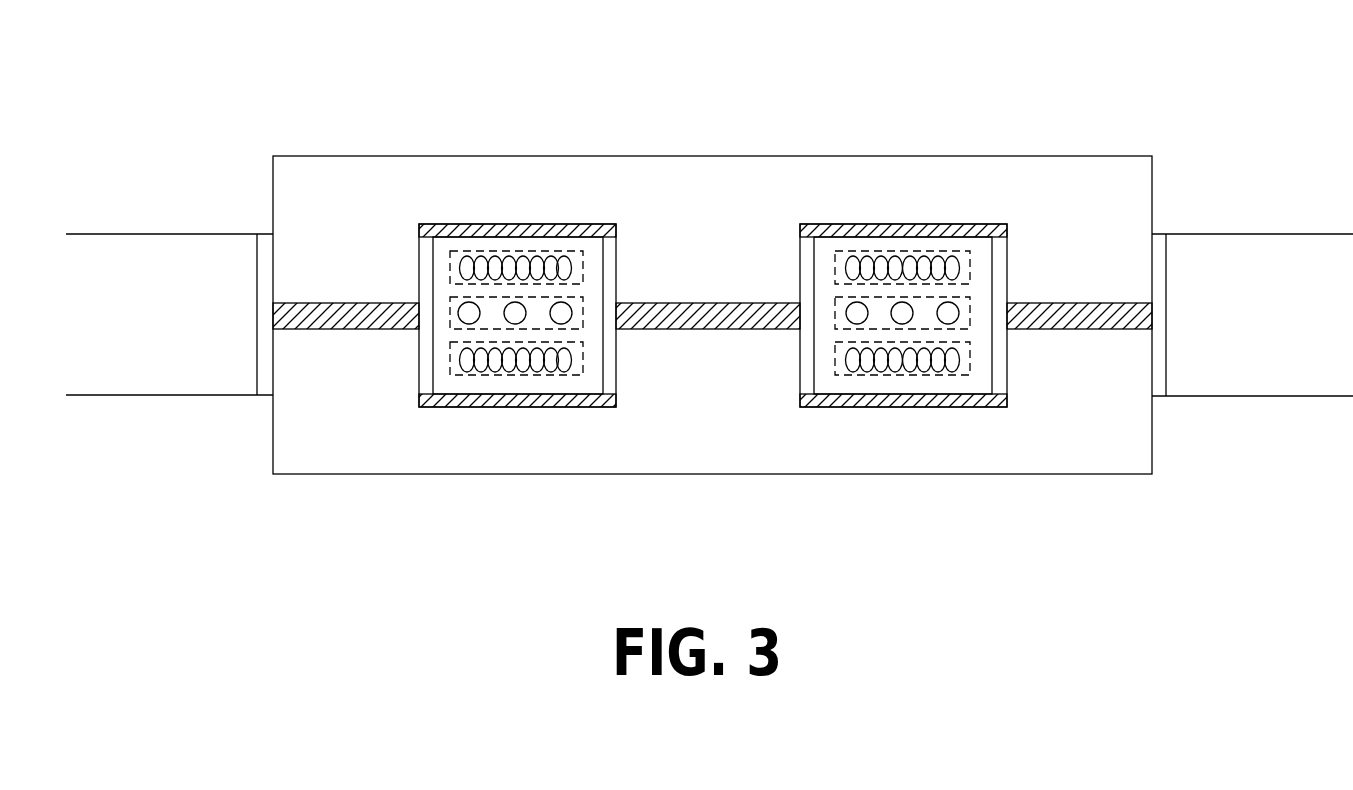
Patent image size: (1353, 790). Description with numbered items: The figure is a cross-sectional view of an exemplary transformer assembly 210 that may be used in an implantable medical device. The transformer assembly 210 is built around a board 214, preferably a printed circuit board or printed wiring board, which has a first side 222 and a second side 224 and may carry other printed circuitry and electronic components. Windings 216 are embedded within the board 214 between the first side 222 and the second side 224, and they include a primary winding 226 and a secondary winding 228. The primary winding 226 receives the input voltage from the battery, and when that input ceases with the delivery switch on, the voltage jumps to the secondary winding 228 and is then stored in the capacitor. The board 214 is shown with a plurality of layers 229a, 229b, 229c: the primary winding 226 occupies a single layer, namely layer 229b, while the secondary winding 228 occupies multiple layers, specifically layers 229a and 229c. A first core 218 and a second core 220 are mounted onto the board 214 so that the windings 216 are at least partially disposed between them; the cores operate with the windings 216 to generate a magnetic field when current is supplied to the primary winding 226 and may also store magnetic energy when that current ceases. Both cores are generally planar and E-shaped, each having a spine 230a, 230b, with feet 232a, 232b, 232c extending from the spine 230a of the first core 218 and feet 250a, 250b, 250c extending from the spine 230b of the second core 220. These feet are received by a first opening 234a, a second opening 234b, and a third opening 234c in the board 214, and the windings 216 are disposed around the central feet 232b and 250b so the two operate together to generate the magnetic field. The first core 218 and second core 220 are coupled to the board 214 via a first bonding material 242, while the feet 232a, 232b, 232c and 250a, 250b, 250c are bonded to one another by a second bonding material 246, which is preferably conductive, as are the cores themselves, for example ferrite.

The transformer assembly 210 is at (1078, 76).
The board 214 is at (169, 319).
The windings 216 is at (528, 355).
The first core 218 is at (427, 170).
The second core 220 is at (347, 452).
The first side 222 is at (168, 232).
The second side 224 is at (162, 396).
The primary winding 226 is at (458, 313).
The secondary winding 228 is at (458, 265).
The layer 229a is at (502, 256).
The layer 229b is at (583, 320).
The layer 229c is at (574, 378).
The spine 230a is at (880, 276).
The spine 230b is at (873, 455).
The foot 232a is at (310, 258).
The foot 232b is at (717, 260).
The foot 232c is at (1125, 252).
The first opening 234a is at (268, 390).
The second opening 234b is at (810, 392).
The third opening 234c is at (1158, 382).
The first bonding material 242 is at (537, 407).
The second bonding material 246 is at (1097, 324).
The foot 250a is at (304, 408).
The foot 250b is at (710, 382).
The foot 250c is at (1123, 390).